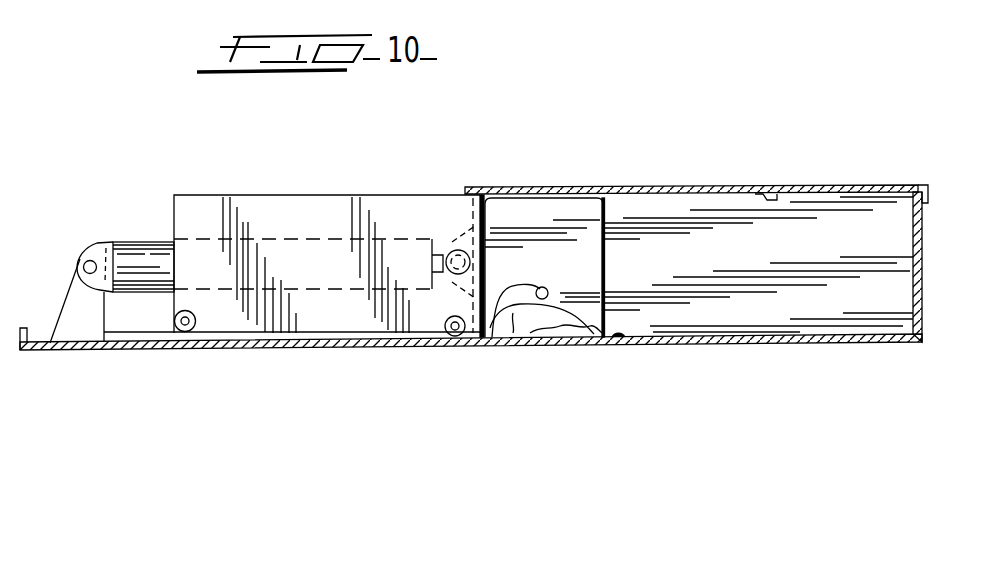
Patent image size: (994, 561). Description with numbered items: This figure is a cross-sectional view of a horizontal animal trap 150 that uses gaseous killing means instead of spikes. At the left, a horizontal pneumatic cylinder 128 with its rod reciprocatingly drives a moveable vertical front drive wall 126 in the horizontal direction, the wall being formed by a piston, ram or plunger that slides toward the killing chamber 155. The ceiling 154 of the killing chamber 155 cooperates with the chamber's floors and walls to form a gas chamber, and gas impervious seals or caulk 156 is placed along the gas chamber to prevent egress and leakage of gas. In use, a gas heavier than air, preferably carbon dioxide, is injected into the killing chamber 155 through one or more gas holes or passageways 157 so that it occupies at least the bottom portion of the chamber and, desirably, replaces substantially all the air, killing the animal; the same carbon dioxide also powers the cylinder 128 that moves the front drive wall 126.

The horizontal pneumatic cylinder 128 is at (143, 241).
The horizontal animal trap 150 is at (420, 180).
The front drive wall 126 is at (483, 218).
The ceiling 154 is at (555, 197).
The killing chamber 155 is at (603, 253).
The gas holes or passageways 157 is at (548, 292).
The gas impervious seals or caulk 156 is at (619, 340).